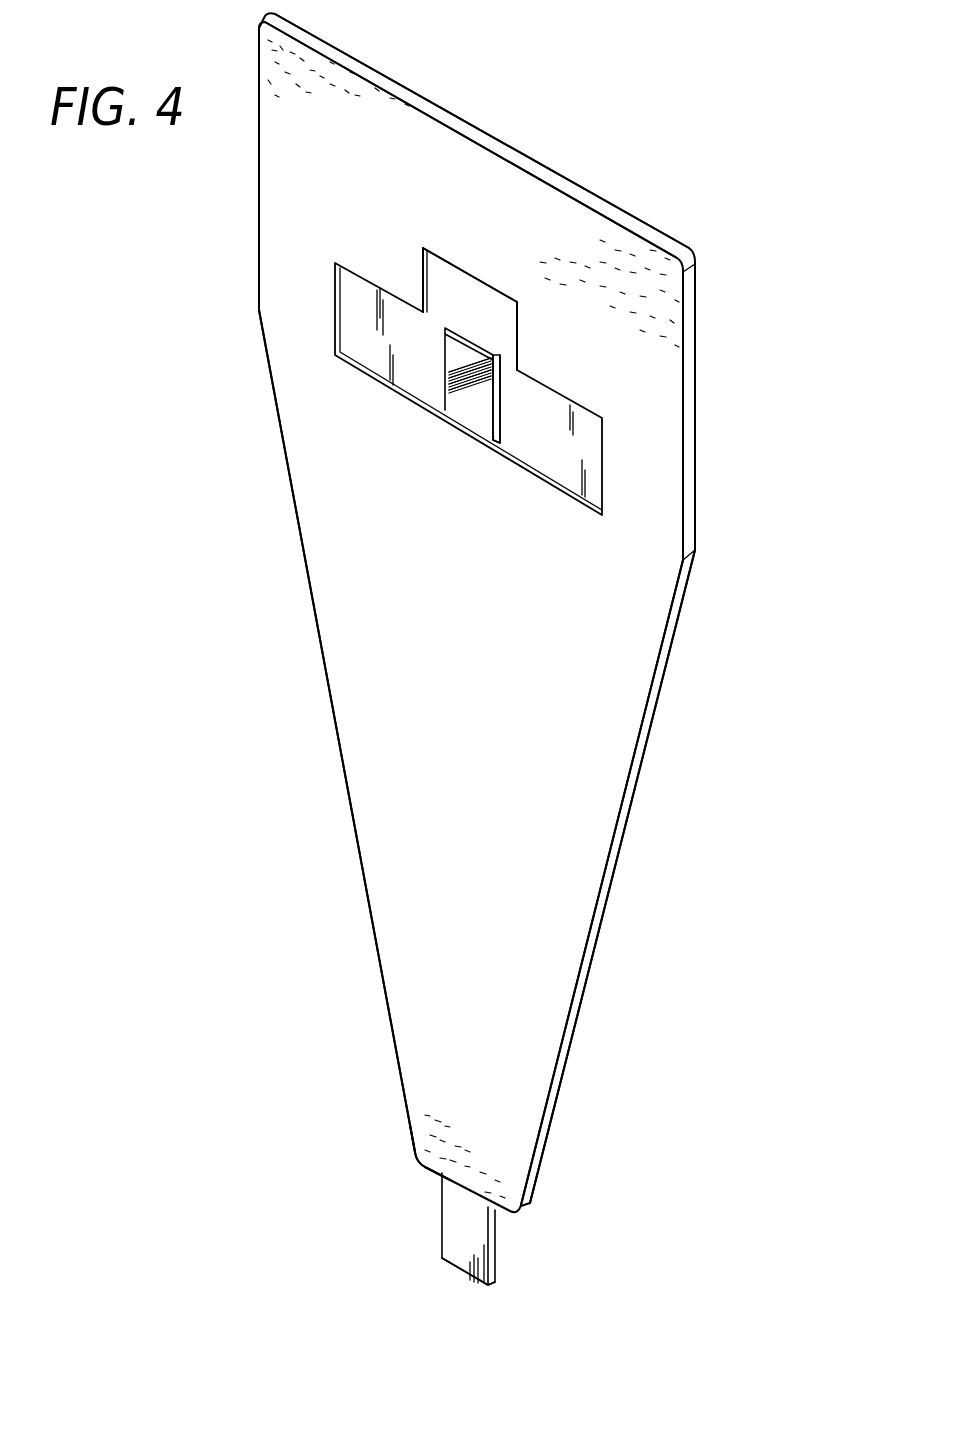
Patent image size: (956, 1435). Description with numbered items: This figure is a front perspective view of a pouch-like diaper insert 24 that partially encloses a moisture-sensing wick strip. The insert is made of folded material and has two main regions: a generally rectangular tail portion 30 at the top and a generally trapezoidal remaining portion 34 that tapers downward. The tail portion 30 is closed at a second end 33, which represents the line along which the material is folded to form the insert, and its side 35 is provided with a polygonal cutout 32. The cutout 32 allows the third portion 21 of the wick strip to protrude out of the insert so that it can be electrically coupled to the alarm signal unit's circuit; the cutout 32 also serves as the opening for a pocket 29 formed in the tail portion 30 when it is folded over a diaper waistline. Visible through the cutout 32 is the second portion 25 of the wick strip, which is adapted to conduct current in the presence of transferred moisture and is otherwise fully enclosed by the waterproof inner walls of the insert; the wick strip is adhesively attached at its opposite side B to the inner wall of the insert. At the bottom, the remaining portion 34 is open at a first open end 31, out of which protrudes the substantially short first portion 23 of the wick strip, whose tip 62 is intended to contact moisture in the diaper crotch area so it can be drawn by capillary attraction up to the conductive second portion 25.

The tail portion 30 is at (703, 357).
The second end 33 is at (573, 185).
The side 35 is at (293, 225).
The diaper insert 24 is at (308, 818).
The remaining portion 34 is at (622, 838).
The first open end 31 is at (433, 1173).
The first portion 23 is at (497, 1245).
The tip 62 is at (455, 1268).
The polygonal cutout 32 is at (532, 364).
The pocket 29 is at (453, 277).
The second portion 25 is at (493, 400).
The third portion 21 is at (515, 405).
The opposite side B is at (467, 350).